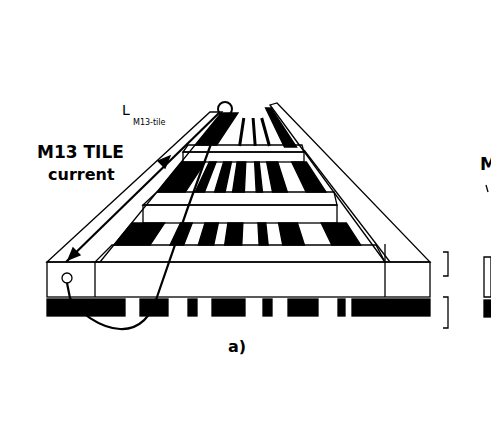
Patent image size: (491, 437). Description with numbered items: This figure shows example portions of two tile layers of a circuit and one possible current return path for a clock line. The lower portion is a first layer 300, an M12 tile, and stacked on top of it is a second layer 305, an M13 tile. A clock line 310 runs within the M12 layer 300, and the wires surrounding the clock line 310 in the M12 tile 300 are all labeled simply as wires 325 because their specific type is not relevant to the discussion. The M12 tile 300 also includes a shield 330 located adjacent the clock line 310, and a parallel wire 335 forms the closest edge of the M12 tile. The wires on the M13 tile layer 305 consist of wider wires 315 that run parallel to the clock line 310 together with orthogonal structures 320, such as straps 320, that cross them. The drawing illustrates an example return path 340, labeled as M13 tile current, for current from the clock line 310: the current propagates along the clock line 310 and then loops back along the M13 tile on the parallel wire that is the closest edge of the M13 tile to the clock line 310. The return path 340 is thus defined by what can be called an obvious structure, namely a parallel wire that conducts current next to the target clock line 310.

The first layer 300 is at (453, 314).
The second layer 305 is at (455, 273).
The clock line 310 is at (143, 328).
The wider wires 315 is at (306, 133).
The orthogonal structures 320 is at (316, 260).
The wires 325 is at (247, 315).
The shield 330 is at (193, 322).
The parallel wire 335 is at (72, 318).
The return path 340 is at (221, 102).